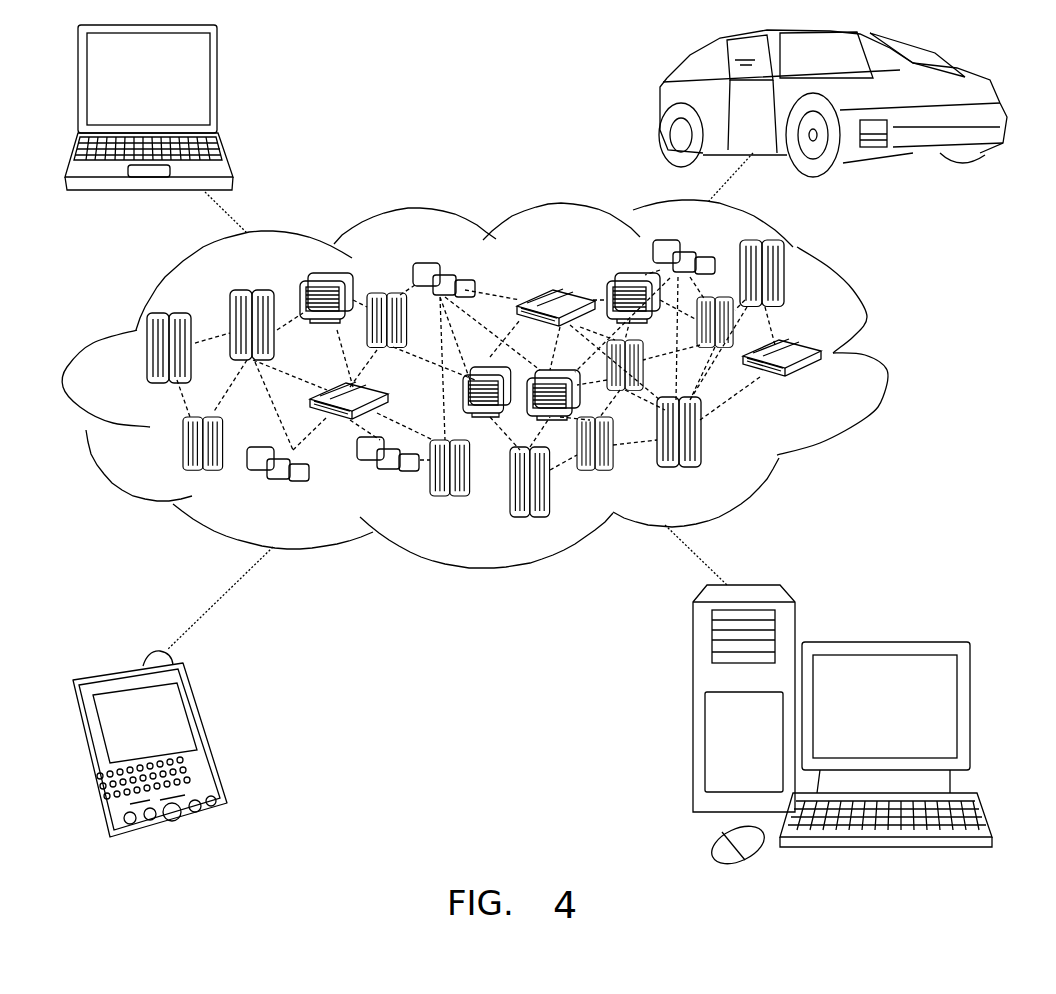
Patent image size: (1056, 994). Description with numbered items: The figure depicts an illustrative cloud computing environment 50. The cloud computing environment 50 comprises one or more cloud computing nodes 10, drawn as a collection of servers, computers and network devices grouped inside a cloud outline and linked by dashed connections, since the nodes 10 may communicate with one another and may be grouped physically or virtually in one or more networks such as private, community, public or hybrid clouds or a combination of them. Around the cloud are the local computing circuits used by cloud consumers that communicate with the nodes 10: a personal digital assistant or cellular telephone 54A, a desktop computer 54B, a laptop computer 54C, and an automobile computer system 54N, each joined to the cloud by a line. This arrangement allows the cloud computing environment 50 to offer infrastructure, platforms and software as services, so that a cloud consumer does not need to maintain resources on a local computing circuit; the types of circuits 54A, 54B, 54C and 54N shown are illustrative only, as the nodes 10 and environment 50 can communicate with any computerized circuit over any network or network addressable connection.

The cloud computing node 10 is at (823, 387).
The cloud computing environment 50 is at (885, 358).
The personal digital assistant (PDA) or cellular telephone 54A is at (207, 737).
The desktop computer 54B is at (880, 640).
The laptop computer 54C is at (220, 87).
The automobile computer system 54N is at (660, 102).